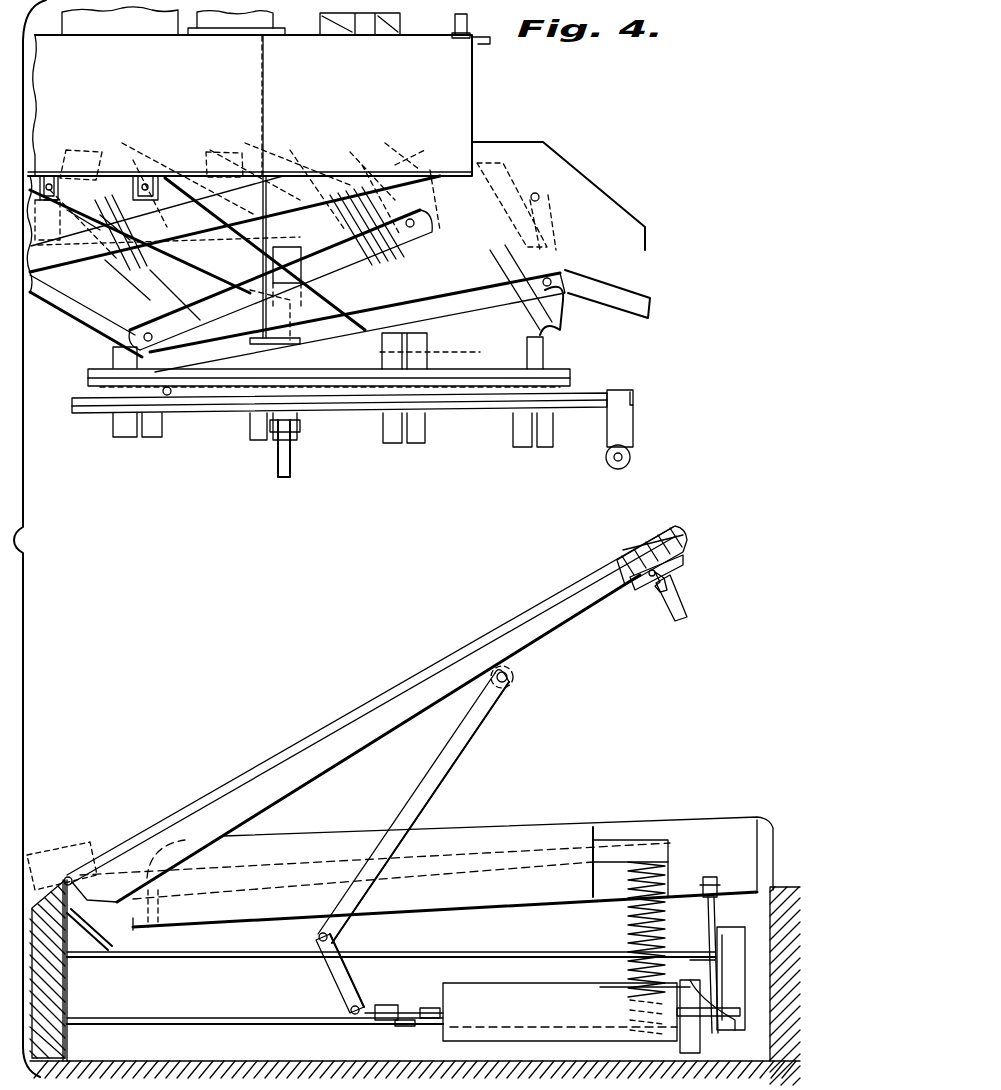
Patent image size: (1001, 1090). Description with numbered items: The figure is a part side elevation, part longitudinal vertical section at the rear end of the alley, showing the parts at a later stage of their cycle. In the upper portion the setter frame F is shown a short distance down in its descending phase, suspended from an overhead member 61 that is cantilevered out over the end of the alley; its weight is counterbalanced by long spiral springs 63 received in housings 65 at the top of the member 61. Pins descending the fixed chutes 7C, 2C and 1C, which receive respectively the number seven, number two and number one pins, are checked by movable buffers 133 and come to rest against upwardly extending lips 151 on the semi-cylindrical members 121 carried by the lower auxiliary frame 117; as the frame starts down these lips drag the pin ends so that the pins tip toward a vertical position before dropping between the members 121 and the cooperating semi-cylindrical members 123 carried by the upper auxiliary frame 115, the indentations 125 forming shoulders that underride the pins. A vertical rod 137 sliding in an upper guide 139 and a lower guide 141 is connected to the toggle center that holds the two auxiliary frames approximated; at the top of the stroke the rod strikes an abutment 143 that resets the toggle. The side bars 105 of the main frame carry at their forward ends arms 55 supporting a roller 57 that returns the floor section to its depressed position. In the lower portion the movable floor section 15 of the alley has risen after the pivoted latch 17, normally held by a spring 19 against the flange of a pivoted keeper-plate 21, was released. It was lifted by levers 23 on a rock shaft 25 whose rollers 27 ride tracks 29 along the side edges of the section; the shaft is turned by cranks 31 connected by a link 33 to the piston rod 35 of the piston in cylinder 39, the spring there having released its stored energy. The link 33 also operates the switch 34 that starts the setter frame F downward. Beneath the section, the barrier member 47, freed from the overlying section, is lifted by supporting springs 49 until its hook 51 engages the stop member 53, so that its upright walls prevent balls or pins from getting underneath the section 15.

The overhead member 61 is at (463, 68).
The housings 65 is at (227, 20).
The spiral springs 63 is at (264, 83).
The chute 7C is at (50, 193).
The chute 2C is at (273, 163).
The chute 1C is at (402, 157).
The movable buffers 133 is at (540, 218).
The abutments 143 is at (307, 278).
The upper auxiliary frame 115 is at (447, 373).
The upper guide 139 is at (402, 342).
The lips 151 is at (563, 338).
The semi-cylindrical member 121 is at (560, 358).
The semi-cylindrical member 123 is at (515, 365).
The setter frame F is at (647, 363).
The indentations 125 is at (250, 413).
The lower guide 141 is at (300, 427).
The vertical rod 137 is at (290, 467).
The lower auxiliary frame 117 is at (453, 413).
The side bar 105 is at (590, 397).
The arms 55 is at (630, 425).
The roller 57 is at (630, 470).
The movable section of the alley floor 15 is at (402, 687).
The tracks 29 is at (572, 623).
The spring 19 is at (670, 580).
The pivoted latch 17 is at (667, 607).
The rollers 27 is at (512, 668).
The levers 23 is at (463, 743).
The rock shaft 25 is at (340, 932).
The cranks 31 is at (333, 978).
The barrier member 47 is at (757, 858).
The supporting springs 49 is at (630, 928).
The hook 51 is at (720, 910).
The keeper-plate 21 is at (700, 940).
The stop member 53 is at (719, 994).
The cylinder 39 is at (547, 1000).
The link 33 is at (380, 1007).
The piston rod 35 is at (437, 1008).
The switch 34 is at (407, 1023).